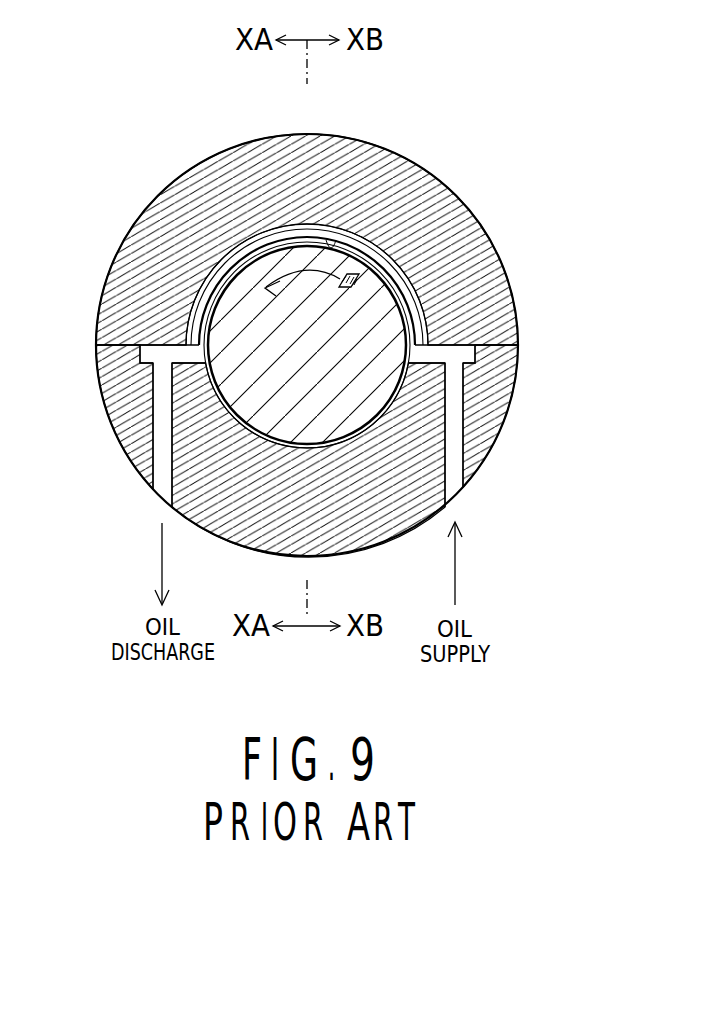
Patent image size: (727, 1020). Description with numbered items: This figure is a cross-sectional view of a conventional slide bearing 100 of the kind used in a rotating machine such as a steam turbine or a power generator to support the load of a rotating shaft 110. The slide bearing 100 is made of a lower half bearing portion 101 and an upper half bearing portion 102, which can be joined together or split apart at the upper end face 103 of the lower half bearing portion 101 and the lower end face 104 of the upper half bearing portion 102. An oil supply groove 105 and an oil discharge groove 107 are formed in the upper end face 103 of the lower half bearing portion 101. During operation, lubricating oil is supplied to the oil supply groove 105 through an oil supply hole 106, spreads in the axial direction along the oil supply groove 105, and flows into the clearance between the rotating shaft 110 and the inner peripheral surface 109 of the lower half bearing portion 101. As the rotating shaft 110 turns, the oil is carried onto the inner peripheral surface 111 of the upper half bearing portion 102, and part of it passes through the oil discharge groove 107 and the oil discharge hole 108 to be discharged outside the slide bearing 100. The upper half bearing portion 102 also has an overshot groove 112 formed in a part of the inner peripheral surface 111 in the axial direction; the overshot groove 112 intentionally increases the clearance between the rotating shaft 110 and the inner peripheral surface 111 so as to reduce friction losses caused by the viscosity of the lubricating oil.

The slide bearing 100 is at (533, 158).
The lower half bearing portion 101 is at (380, 512).
The upper half bearing portion 102 is at (398, 180).
The upper end face 103 is at (500, 338).
The lower end face 104 is at (115, 342).
The oil supply groove 105 is at (460, 353).
The oil supply hole 106 is at (455, 440).
The oil discharge groove 107 is at (145, 352).
The oil discharge hole 108 is at (160, 443).
The inner peripheral surface 109 is at (238, 388).
The rotating shaft 110 is at (372, 290).
The inner peripheral surface 111 is at (331, 246).
The overshot groove 112 is at (268, 231).